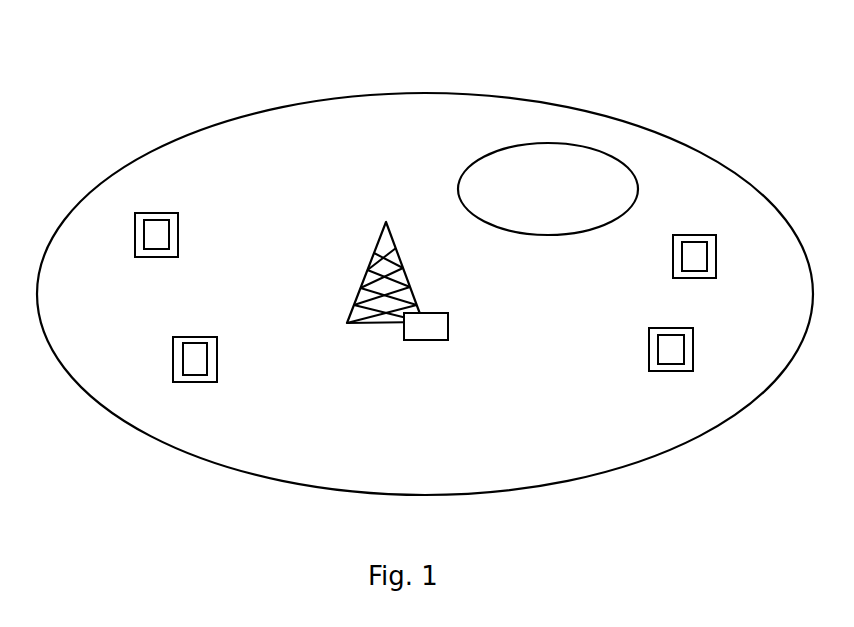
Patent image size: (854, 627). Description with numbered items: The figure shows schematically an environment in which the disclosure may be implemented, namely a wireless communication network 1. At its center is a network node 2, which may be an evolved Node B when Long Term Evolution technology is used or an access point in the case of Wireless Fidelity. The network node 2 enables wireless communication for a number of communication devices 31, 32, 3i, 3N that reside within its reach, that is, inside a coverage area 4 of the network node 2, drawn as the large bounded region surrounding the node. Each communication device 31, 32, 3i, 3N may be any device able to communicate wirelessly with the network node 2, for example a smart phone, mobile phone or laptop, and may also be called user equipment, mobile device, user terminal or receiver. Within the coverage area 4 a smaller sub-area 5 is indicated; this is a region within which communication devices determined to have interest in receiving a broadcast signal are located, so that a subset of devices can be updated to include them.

The wireless communication network 1 is at (539, 62).
The network node 2 is at (437, 326).
The communication device 3N is at (178, 234).
The communication device 3i is at (217, 358).
The communication device 31 is at (716, 255).
The communication device 32 is at (693, 348).
The coverage area 4 is at (623, 433).
The sub-area 5 is at (601, 172).